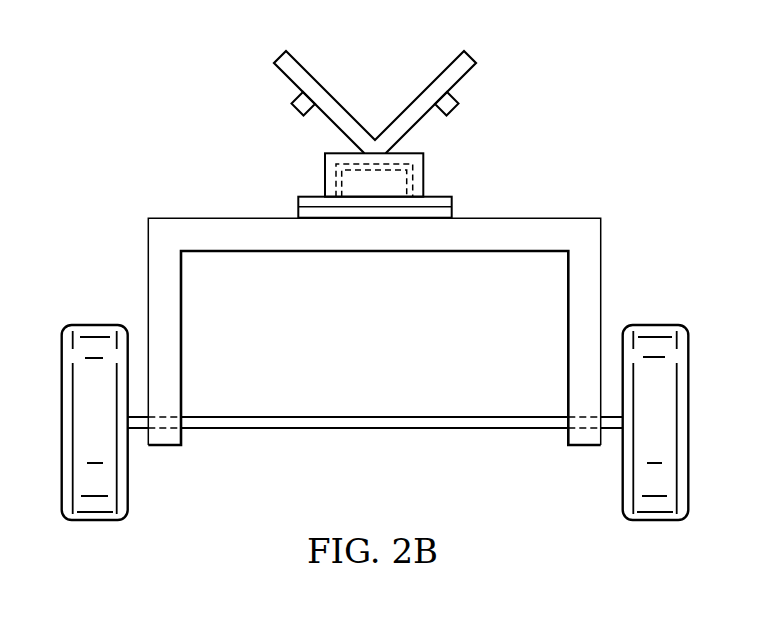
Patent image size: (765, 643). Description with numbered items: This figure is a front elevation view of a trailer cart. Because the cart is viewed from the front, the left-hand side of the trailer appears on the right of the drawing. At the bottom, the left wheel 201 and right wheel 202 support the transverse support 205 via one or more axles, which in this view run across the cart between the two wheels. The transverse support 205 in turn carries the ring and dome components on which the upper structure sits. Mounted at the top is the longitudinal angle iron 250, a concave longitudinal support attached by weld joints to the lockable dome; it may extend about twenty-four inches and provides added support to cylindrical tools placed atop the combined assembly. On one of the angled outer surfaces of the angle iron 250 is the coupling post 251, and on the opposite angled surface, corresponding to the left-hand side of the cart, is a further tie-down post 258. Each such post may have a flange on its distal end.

The left wheel 201 is at (653, 522).
The right wheel 202 is at (93, 522).
The transverse support 205 is at (525, 217).
The longitudinal angle iron 250 is at (334, 92).
The coupling post 251 is at (293, 113).
The tie-down post 258 is at (455, 114).